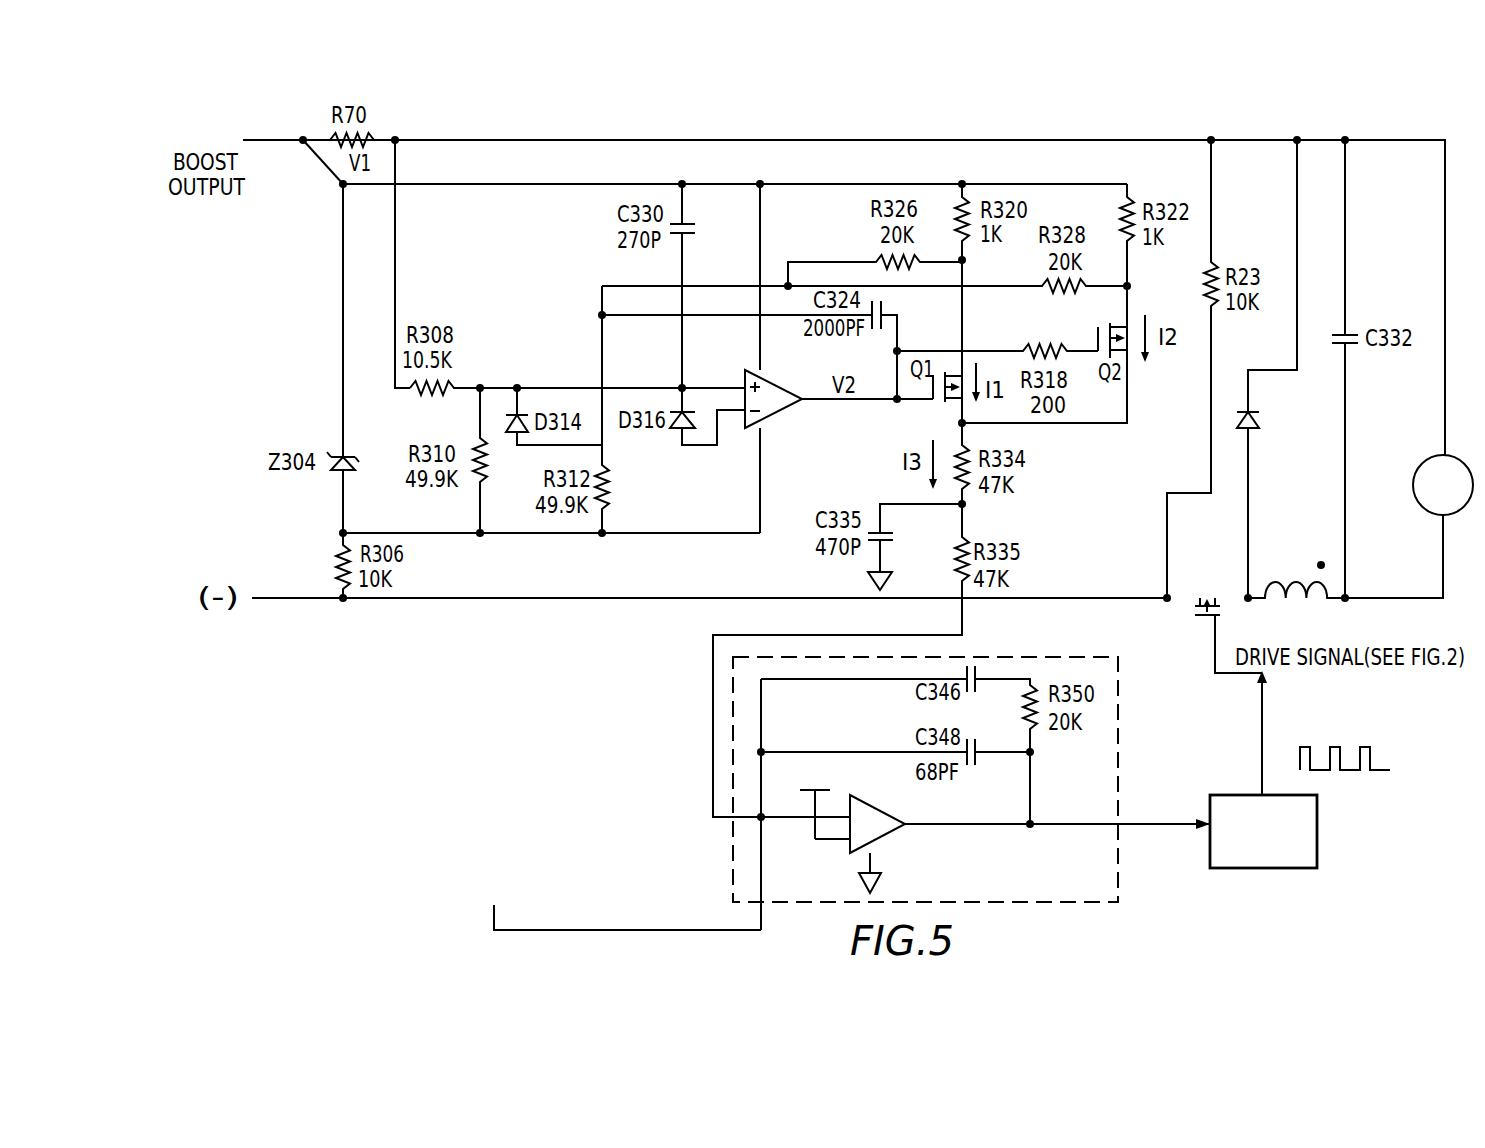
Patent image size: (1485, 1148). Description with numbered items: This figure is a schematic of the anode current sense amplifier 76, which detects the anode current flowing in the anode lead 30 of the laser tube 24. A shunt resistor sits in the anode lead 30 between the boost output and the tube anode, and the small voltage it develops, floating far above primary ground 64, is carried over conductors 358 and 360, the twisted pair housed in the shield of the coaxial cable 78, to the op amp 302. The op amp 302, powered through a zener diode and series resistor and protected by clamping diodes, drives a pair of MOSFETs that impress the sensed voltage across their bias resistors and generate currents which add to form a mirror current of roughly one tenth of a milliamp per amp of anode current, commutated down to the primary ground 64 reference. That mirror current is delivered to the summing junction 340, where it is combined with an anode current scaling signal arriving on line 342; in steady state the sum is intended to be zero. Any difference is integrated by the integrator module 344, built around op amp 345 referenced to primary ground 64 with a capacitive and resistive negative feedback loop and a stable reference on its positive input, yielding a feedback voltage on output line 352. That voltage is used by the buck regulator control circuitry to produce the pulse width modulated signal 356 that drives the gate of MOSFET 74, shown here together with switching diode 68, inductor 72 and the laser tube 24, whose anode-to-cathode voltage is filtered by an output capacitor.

The anode lead 30 is at (520, 133).
The anode current sense amplifier 76 is at (1074, 129).
The conductor 358 is at (396, 262).
The conductor 360 is at (343, 275).
The op amp 302 is at (783, 412).
The primary ground 64 is at (507, 600).
The switching diode 68 is at (1260, 420).
The inductor 72 is at (1278, 581).
The laser tube 24 is at (1425, 462).
The MOSFET 74 is at (1200, 632).
The coaxial cable 78 is at (1317, 843).
The output line 352 is at (1150, 824).
The pulse width modulated signal 356 is at (1372, 757).
The integrator module 344 is at (1118, 790).
The summing junction 340 is at (757, 822).
The line 342 is at (707, 930).
The op amp 345 is at (848, 847).